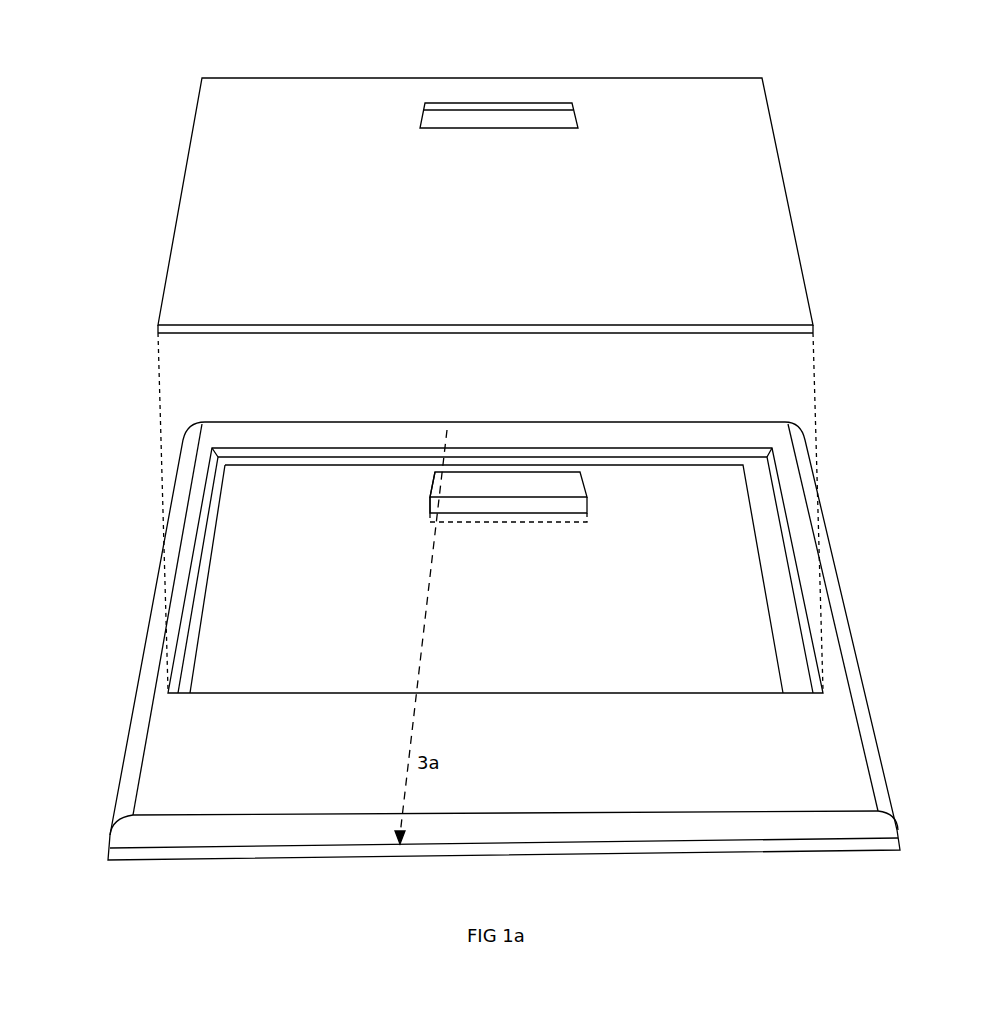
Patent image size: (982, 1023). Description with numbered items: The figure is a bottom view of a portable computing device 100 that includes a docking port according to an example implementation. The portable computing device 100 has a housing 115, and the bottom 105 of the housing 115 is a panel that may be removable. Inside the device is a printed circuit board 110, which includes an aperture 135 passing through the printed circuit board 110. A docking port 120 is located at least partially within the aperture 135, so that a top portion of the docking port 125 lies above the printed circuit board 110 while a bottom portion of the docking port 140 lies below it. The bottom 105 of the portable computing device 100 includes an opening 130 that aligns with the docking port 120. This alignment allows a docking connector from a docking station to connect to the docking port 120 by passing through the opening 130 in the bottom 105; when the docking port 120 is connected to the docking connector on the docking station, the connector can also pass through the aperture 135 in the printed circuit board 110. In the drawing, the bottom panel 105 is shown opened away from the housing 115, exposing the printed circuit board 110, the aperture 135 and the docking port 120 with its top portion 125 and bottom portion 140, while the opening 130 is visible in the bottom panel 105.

The portable computing device 100 is at (150, 407).
The bottom panel 105 is at (630, 78).
The printed circuit board 110 is at (217, 525).
The housing 115 is at (688, 447).
The docking port 120 is at (510, 472).
The top portion of the docking port 125 is at (553, 507).
The opening 130 is at (482, 103).
The aperture 135 is at (590, 513).
The bottom portion of the docking port 140 is at (430, 493).